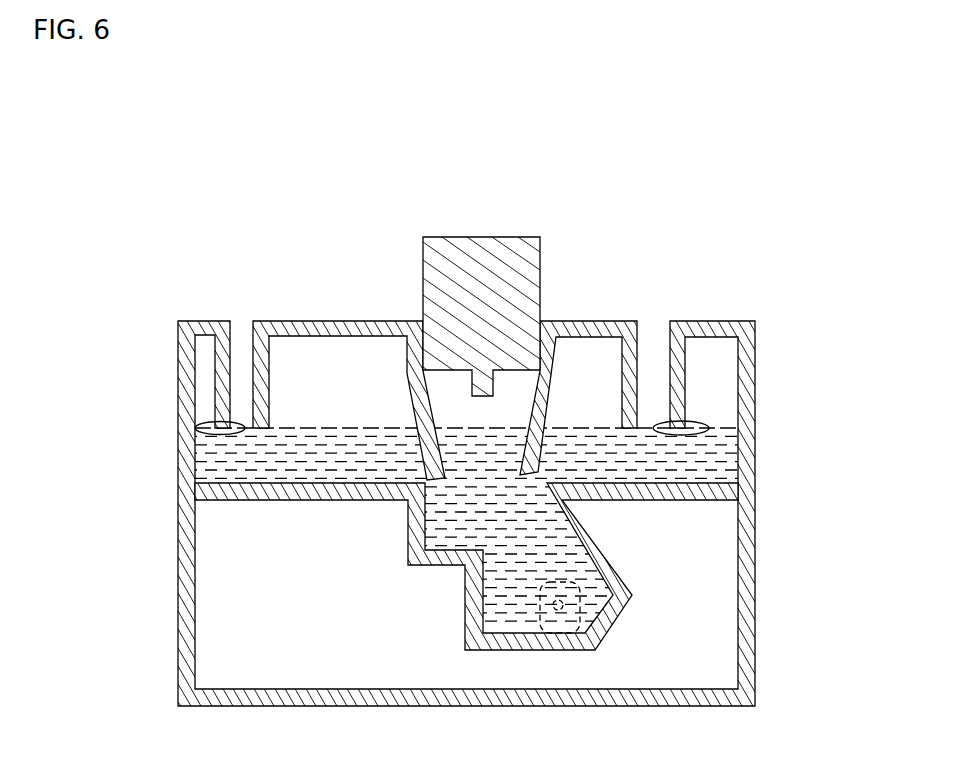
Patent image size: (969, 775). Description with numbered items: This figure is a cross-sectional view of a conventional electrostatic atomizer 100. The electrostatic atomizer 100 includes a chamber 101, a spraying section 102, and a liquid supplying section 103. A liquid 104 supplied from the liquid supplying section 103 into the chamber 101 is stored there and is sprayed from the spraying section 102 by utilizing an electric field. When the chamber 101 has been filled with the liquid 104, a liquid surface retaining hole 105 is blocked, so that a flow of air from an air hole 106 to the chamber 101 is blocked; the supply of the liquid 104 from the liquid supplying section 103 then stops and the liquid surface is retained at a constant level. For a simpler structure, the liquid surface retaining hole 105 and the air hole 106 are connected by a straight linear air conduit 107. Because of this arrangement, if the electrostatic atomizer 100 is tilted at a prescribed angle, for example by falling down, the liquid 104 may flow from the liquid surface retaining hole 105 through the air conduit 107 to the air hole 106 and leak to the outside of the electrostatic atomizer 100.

The electrostatic atomizer 100 is at (805, 193).
The chamber 101 is at (715, 475).
The spraying section 102 is at (577, 623).
The liquid supplying section 103 is at (470, 240).
The liquid 104 is at (197, 475).
The liquid surface retaining hole 105 is at (196, 431).
The air hole 106 is at (230, 334).
The straight linear air conduit 107 is at (246, 381).